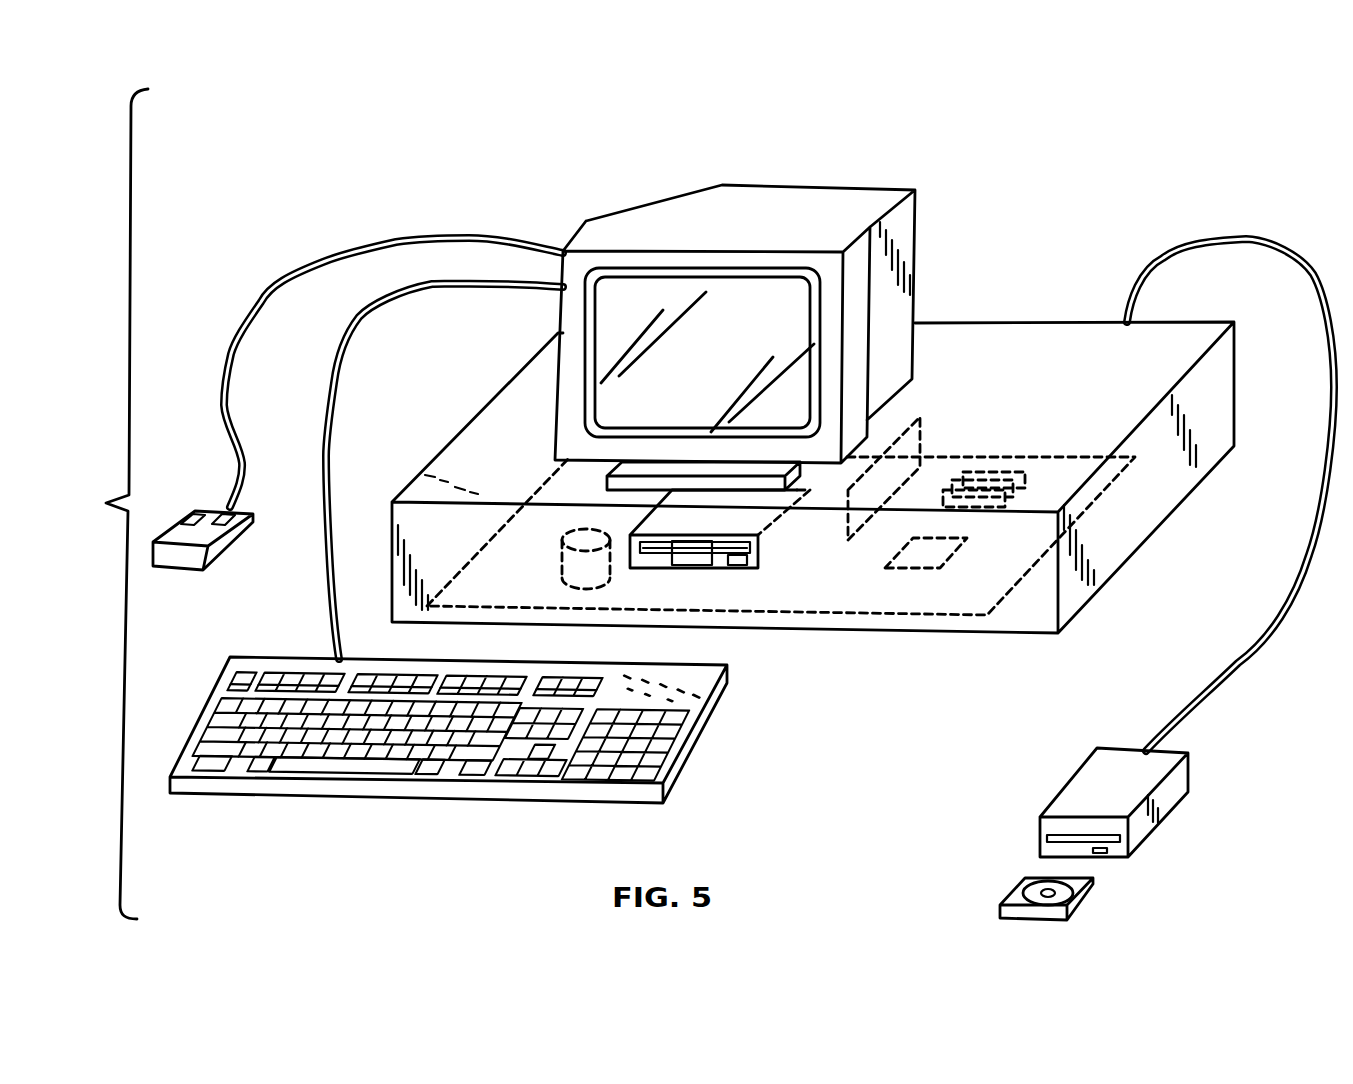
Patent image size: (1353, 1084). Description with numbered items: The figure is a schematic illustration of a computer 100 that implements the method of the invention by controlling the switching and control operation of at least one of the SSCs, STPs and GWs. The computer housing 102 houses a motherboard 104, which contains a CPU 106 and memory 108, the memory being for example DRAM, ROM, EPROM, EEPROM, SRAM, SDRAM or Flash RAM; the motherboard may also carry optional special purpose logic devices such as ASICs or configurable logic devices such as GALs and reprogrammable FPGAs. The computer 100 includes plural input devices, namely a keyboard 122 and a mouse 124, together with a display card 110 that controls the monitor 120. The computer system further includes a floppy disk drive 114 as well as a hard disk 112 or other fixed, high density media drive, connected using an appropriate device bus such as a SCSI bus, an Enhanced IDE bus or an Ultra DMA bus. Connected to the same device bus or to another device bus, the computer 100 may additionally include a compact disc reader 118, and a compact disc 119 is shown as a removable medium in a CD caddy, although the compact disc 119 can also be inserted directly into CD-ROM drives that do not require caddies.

The computer 100 is at (101, 504).
The computer housing 102 is at (1017, 332).
The motherboard 104 is at (1068, 472).
The CPU 106 is at (940, 557).
The memory 108 is at (977, 477).
The display card 110 is at (920, 433).
The hard disk 112 is at (568, 568).
The floppy disk drive 114 is at (752, 563).
The compact disc reader 118 is at (1093, 768).
The compact disc 119 is at (1087, 895).
The monitor 120 is at (812, 215).
The keyboard 122 is at (717, 713).
The mouse 124 is at (231, 540).